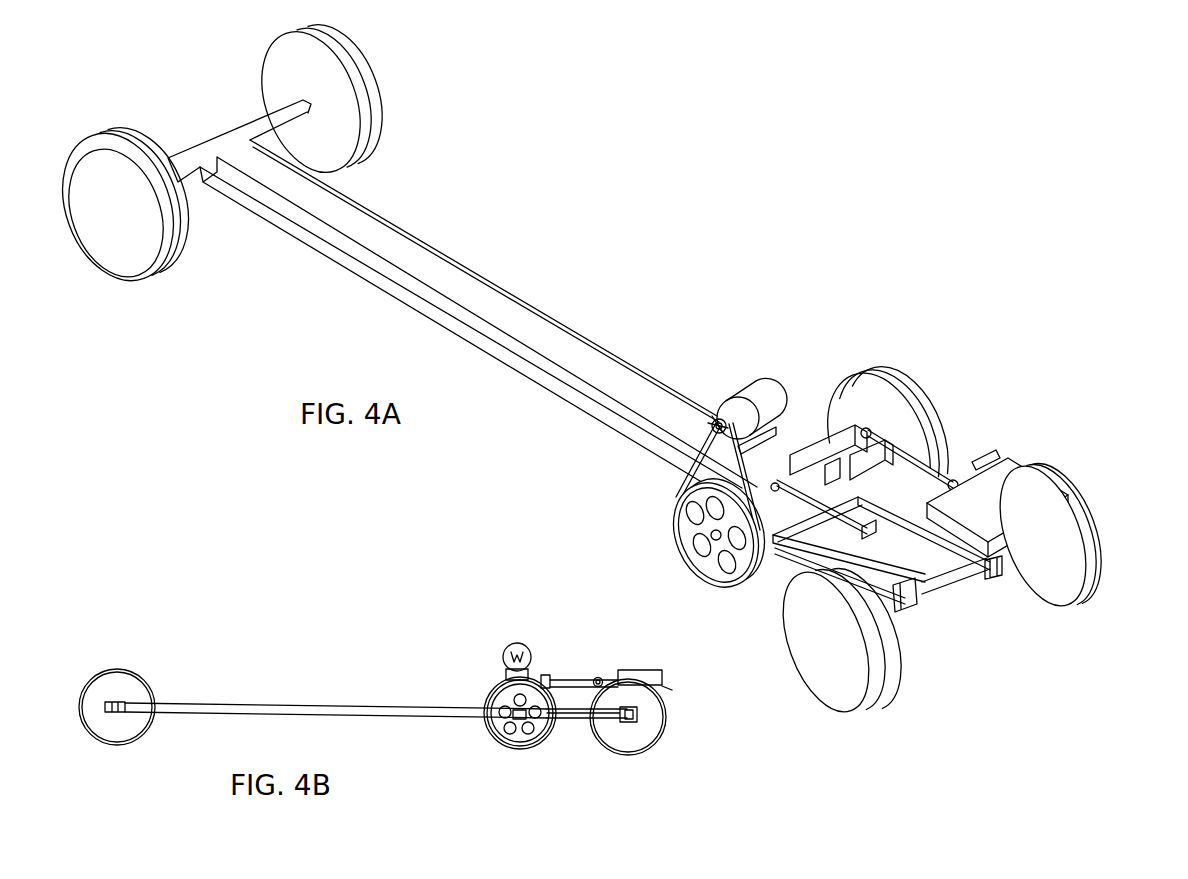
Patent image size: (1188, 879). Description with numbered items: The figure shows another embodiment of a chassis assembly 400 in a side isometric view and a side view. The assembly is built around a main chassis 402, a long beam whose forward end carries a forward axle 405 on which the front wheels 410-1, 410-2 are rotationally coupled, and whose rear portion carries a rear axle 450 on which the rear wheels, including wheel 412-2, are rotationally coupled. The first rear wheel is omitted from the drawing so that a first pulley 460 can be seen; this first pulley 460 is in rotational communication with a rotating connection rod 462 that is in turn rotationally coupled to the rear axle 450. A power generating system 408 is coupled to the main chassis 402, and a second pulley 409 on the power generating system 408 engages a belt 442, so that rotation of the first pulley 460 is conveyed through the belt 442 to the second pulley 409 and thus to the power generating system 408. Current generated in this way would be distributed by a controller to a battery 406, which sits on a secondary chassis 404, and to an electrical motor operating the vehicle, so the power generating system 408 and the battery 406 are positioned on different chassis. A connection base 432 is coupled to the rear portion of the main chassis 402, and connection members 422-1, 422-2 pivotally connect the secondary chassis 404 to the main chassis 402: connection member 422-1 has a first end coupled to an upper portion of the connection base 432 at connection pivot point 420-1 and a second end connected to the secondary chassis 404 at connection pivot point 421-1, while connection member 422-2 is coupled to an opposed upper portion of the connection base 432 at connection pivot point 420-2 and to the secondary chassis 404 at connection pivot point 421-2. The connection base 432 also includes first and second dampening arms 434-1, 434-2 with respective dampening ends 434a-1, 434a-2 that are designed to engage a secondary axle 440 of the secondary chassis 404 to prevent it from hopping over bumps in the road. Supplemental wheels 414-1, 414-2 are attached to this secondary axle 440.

In FIG. 4A, the chassis assembly 400 is at (772, 240).
In FIG. 4B, the chassis assembly 400 is at (474, 627).
In FIG. 4A, the main chassis 402 is at (457, 261).
In FIG. 4B, the main chassis 402 is at (325, 707).
In FIG. 4A, the secondary chassis 404 is at (945, 560).
In FIG. 4B, the secondary chassis 404 is at (662, 686).
In FIG. 4A, the forward axle 405 is at (195, 146).
In FIG. 4A, the battery 406 is at (1008, 495).
In FIG. 4B, the battery 406 is at (637, 670).
In FIG. 4A, the power generating system 408 is at (745, 390).
In FIG. 4A, the second pulley 409 is at (707, 391).
In FIG. 4A, the front wheel 410-1 is at (120, 243).
In FIG. 4B, the front wheel 410-1 is at (130, 678).
In FIG. 4A, the front wheel 410-2 is at (376, 104).
In FIG. 4A, the rear wheel 412-2 is at (912, 388).
In FIG. 4A, the supplemental wheel 414-1 is at (827, 677).
In FIG. 4B, the supplemental wheel 414-1 is at (630, 733).
In FIG. 4A, the supplemental wheel 414-2 is at (1085, 520).
In FIG. 4A, the connection pivot point 420-1 is at (787, 453).
In FIG. 4B, the connection pivot point 420-1 is at (550, 672).
In FIG. 4A, the connection pivot point 420-2 is at (860, 447).
In FIG. 4A, the connection pivot point 421-1 is at (870, 538).
In FIG. 4B, the connection pivot point 421-1 is at (600, 680).
In FIG. 4A, the connection pivot point 421-2 is at (982, 457).
In FIG. 4A, the connection member 422-1 is at (820, 570).
In FIG. 4B, the connection member 422-1 is at (575, 675).
In FIG. 4A, the connection member 422-2 is at (932, 447).
In FIG. 4A, the connection base 432 is at (828, 466).
In FIG. 4A, the first dampening arm 434-1 is at (777, 560).
In FIG. 4B, the first dampening arm 434-1 is at (567, 723).
In FIG. 4A, the second dampening arm 434-2 is at (893, 515).
In FIG. 4A, the dampening end 434a-1 is at (912, 622).
In FIG. 4A, the dampening end 434a-2 is at (999, 576).
In FIG. 4A, the secondary axle 440 is at (945, 592).
In FIG. 4A, the belt 442 is at (680, 461).
In FIG. 4A, the rear axle 450 is at (773, 568).
In FIG. 4A, the first pulley 460 is at (680, 540).
In FIG. 4B, the first pulley 460 is at (493, 733).
In FIG. 4A, the rotating connection rod 462 is at (705, 572).